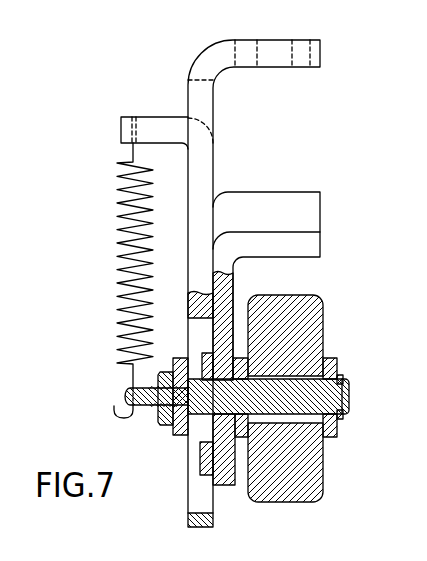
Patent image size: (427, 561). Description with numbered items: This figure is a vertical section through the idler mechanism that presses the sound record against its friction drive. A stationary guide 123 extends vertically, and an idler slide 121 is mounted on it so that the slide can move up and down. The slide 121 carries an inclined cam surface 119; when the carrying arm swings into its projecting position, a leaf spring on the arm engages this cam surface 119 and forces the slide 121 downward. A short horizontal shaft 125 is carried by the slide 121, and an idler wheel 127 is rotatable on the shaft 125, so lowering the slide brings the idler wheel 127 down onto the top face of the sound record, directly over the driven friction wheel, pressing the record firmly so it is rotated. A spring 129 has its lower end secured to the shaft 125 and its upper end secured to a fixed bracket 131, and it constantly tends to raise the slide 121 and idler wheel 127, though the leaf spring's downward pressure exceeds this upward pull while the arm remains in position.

The inclined cam surface 119 is at (250, 207).
The idler slide 121 is at (230, 289).
The stationary guide 123 is at (204, 101).
The short horizontal shaft 125 is at (292, 380).
The idler wheel 127 is at (313, 478).
The spring 129 is at (110, 263).
The fixed bracket 131 is at (154, 130).